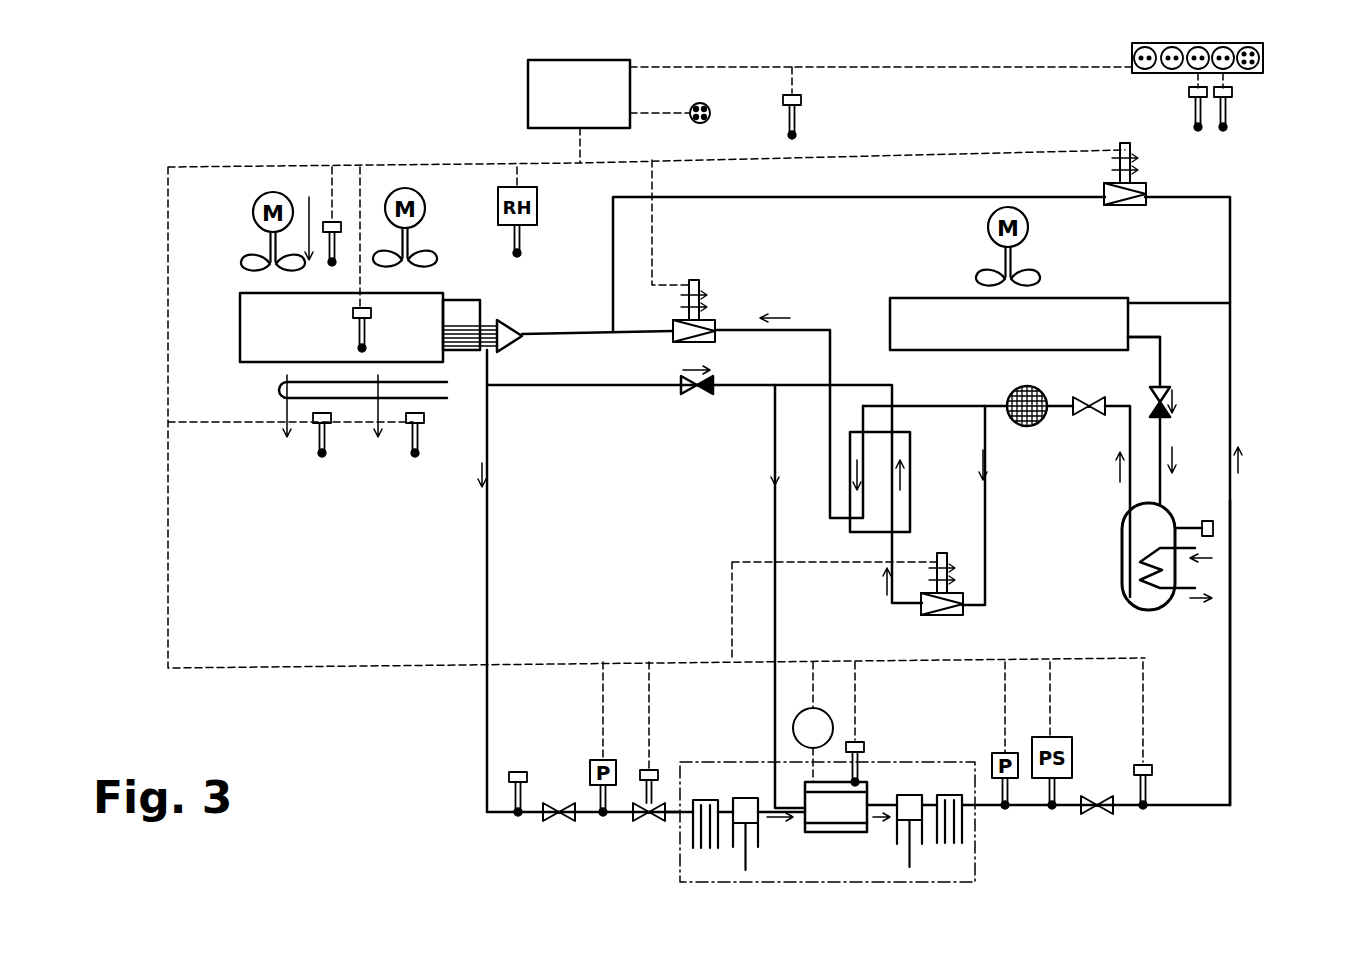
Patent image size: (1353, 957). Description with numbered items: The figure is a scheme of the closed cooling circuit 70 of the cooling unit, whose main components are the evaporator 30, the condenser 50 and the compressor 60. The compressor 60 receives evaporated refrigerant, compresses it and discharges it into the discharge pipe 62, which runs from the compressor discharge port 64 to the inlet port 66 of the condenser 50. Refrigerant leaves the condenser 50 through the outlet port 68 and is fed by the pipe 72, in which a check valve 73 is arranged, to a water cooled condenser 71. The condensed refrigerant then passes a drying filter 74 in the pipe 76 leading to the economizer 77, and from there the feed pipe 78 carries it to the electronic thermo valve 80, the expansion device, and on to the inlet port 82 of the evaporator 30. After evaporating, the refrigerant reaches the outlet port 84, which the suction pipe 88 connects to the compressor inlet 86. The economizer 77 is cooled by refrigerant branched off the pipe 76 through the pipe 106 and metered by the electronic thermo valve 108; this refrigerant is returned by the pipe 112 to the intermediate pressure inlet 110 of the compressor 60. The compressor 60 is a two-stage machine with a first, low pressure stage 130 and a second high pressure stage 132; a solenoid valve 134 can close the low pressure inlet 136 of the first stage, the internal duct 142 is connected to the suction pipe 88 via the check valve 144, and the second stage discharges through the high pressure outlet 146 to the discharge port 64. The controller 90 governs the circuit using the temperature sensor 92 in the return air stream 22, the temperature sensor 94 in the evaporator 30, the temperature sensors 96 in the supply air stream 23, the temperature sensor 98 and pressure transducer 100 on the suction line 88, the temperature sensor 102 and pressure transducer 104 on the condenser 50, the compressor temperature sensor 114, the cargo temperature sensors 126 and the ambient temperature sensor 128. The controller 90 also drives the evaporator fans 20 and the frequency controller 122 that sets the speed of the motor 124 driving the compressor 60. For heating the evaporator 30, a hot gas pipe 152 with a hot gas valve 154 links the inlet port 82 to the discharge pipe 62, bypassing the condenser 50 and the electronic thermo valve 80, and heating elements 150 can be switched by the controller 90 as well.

The evaporator fans 20 is at (263, 195).
The return air stream 22 is at (309, 197).
The supply air stream 23 is at (285, 440).
The evaporator 30 is at (250, 312).
The condenser 50 is at (1080, 298).
The compressor 60 is at (890, 760).
The discharge pipe 62 is at (1228, 597).
The compressor discharge port 64 is at (1070, 810).
The inlet port 66 is at (1137, 303).
The outlet port 68 is at (1135, 337).
The closed cooling circuit 70 is at (1255, 262).
The water cooled condenser 71 is at (1175, 510).
The pipe 72 is at (1163, 440).
The check valve 73 is at (1165, 390).
The drying filter 74 is at (1040, 420).
The pipe 76 is at (918, 406).
The economizer 77 is at (912, 490).
The feed pipe 78 is at (835, 335).
The electronic thermo valve 80 is at (718, 320).
The inlet port 82 is at (500, 350).
The outlet port 84 is at (458, 300).
The compressor inlet 86 is at (578, 818).
The suction pipe 88 is at (485, 612).
The controller 90 is at (528, 100).
The temperature sensor 92 is at (336, 258).
The temperature sensor 94 is at (358, 347).
The temperature sensors 96 is at (318, 456).
The temperature sensor 98 is at (516, 814).
The pressure transducer 100 is at (590, 758).
The temperature sensor 102 is at (1146, 808).
The pressure transducer 104 is at (998, 753).
The pipe 106 is at (987, 517).
The electronic thermo valve 108 is at (965, 607).
The intermediate pressure inlet 110 is at (773, 383).
The pipe 112 is at (812, 383).
The temperature sensor 114 is at (855, 740).
The frequency controller 122 is at (812, 708).
The motor 124 is at (845, 823).
The cargo temperature sensors 126 is at (1195, 125).
The ambient temperature sensor 128 is at (796, 135).
The first, low pressure stage 130 is at (708, 800).
The second high pressure stage 132 is at (945, 795).
The solenoid valve 134 is at (640, 818).
The low pressure inlet 136 is at (672, 818).
The internal duct 142 is at (746, 798).
The check valve 144 is at (697, 397).
The high pressure outlet 146 is at (980, 808).
The heating elements 150 is at (273, 392).
The hot gas pipe 152 is at (812, 197).
The hot gas valve 154 is at (1148, 190).